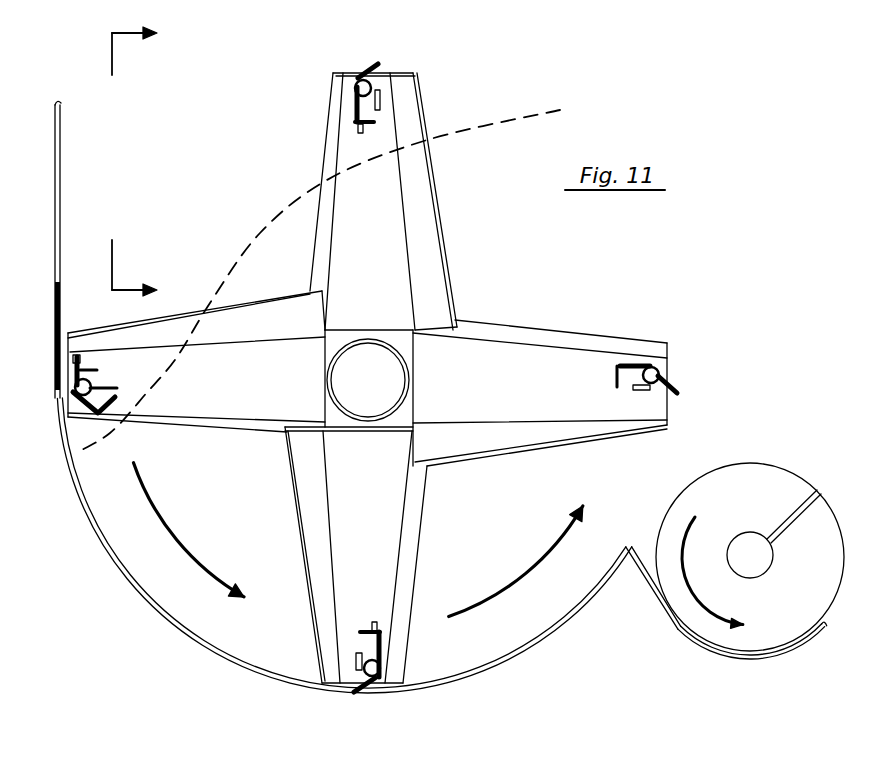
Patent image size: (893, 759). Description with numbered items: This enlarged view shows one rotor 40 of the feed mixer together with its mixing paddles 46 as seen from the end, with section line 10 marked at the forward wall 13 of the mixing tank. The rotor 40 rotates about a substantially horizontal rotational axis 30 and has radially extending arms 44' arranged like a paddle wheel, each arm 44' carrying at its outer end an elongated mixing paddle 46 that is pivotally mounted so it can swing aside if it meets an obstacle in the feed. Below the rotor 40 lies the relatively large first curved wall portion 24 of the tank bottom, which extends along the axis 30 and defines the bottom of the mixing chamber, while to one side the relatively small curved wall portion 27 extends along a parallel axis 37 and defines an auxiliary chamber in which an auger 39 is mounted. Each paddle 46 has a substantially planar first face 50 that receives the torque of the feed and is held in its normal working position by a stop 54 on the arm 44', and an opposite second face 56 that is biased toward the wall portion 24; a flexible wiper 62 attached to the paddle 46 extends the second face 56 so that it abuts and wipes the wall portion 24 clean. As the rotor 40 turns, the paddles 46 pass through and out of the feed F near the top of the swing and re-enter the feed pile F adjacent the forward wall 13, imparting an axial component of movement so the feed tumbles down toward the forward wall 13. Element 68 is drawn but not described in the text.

The section line 10- 10 is at (119, 161).
The forward wall 13 is at (55, 205).
The first curved wall portion 24 is at (250, 670).
The small curved wall portion 27 is at (757, 658).
The rotational axis 30 is at (368, 378).
The auxiliary chamber axis 37 is at (750, 556).
The auger 39 is at (658, 592).
The rotor 40 is at (243, 503).
The arm 44' is at (367, 378).
The mixing paddle 46 is at (360, 68).
The first face 50 is at (382, 664).
The stop 54 is at (358, 128).
The second face 56 is at (380, 688).
The flexible wiper 62 is at (370, 694).
The stop 68 is at (378, 87).
The feed F is at (240, 246).